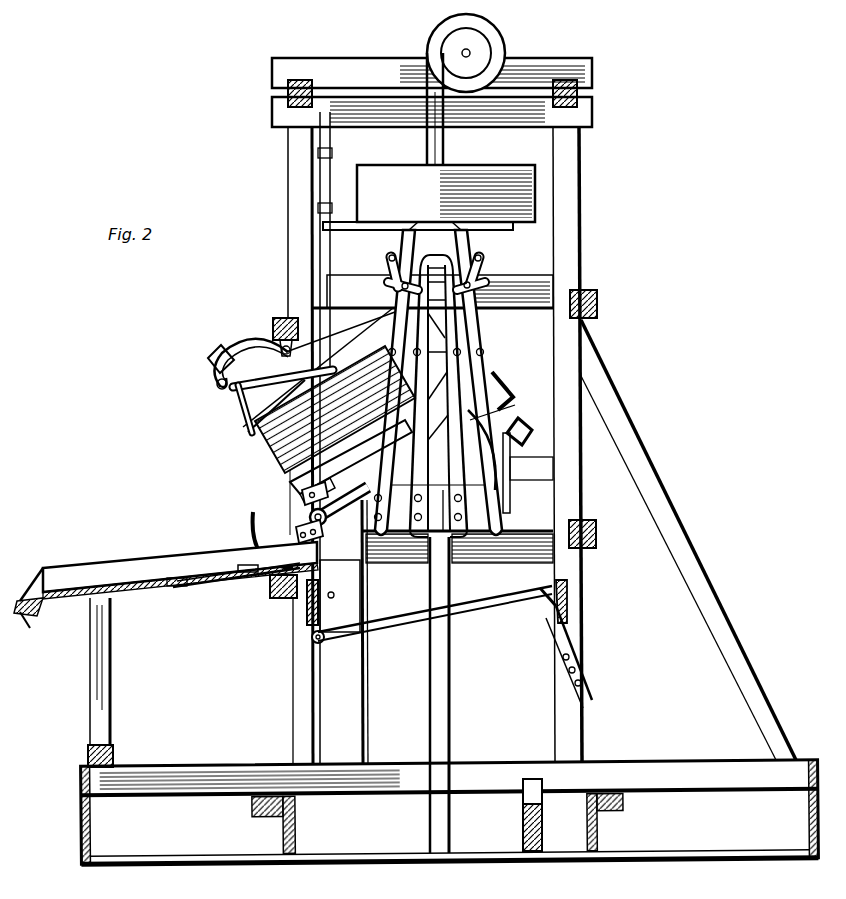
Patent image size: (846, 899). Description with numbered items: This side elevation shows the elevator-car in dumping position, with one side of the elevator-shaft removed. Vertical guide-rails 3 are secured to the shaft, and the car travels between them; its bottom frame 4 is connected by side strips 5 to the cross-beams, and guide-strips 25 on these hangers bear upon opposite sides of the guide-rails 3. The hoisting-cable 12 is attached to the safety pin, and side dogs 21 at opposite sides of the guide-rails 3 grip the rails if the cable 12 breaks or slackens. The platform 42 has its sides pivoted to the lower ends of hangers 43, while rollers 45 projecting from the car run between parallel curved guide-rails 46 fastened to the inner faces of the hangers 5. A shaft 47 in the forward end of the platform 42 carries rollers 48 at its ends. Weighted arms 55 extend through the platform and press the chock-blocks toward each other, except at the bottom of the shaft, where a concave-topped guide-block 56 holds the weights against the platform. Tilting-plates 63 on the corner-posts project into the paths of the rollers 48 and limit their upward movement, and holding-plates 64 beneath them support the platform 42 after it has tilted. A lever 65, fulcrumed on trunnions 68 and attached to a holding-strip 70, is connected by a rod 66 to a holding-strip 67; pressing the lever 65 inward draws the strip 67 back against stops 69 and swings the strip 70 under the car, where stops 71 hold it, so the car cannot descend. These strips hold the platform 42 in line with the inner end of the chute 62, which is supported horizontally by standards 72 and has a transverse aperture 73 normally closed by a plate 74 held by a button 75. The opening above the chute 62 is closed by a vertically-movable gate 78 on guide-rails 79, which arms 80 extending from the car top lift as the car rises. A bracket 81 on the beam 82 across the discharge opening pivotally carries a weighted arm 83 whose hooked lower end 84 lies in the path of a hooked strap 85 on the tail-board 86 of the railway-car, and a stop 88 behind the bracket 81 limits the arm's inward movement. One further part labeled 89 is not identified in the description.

The guide-rails 3 is at (452, 695).
The bottom frame 4 is at (548, 510).
The side strips 5 is at (483, 360).
The hoisting-cable 12 is at (445, 143).
The dogs 21 is at (378, 288).
The guide-strips 25 is at (418, 333).
The platform 42 is at (535, 362).
The hangers 43 is at (420, 398).
The rollers 45 is at (505, 408).
The curved guide-rails 46 is at (480, 468).
The shaft 47 is at (308, 515).
The rollers 48 is at (315, 525).
The weighted arm 55 is at (540, 420).
The guide-block 56 is at (522, 815).
The chute 62 is at (123, 596).
The tilting-plates 63 is at (300, 500).
The holding-plates 64 is at (280, 598).
The lever 65 is at (248, 518).
The rod 66 is at (392, 627).
The holding-strip 67 is at (570, 594).
The trunnions 68 is at (312, 630).
The stops 69 is at (548, 630).
The holding-strip 70 is at (330, 585).
The stops 71 is at (333, 598).
The standards 72 is at (112, 706).
The aperture 73 is at (205, 585).
The plate 74 is at (185, 575).
The button 75 is at (246, 562).
The gate 78 is at (318, 155).
The guide-rails 79 is at (332, 258).
The arms 80 is at (348, 215).
The bracket 81 is at (272, 338).
The beam 82 is at (272, 320).
The weighted arm 83 is at (218, 350).
The hooked lower end 84 is at (218, 388).
The hooked strap 85 is at (283, 372).
The tail-board 86 is at (242, 425).
The stop 88 is at (320, 345).
The rod 89 is at (318, 370).